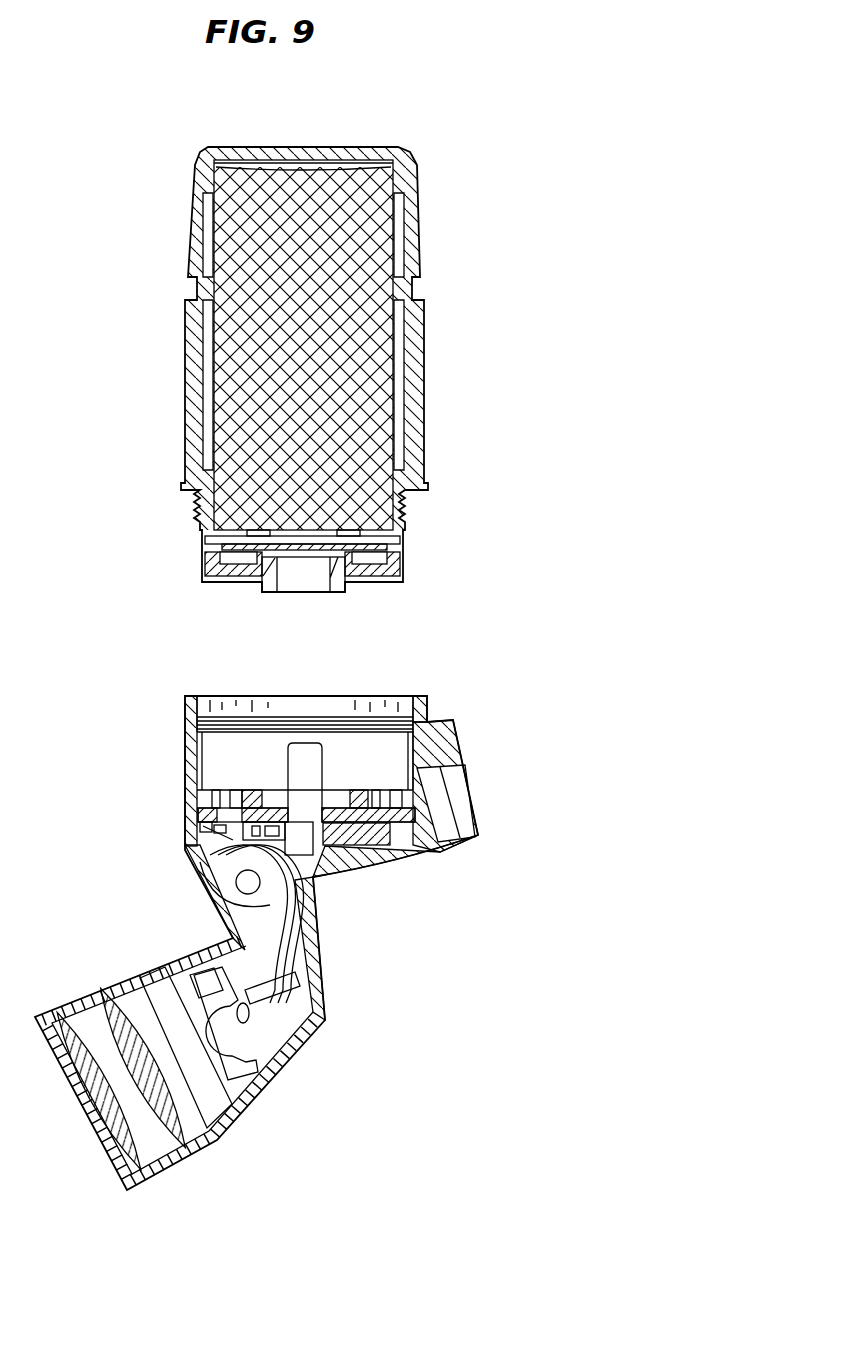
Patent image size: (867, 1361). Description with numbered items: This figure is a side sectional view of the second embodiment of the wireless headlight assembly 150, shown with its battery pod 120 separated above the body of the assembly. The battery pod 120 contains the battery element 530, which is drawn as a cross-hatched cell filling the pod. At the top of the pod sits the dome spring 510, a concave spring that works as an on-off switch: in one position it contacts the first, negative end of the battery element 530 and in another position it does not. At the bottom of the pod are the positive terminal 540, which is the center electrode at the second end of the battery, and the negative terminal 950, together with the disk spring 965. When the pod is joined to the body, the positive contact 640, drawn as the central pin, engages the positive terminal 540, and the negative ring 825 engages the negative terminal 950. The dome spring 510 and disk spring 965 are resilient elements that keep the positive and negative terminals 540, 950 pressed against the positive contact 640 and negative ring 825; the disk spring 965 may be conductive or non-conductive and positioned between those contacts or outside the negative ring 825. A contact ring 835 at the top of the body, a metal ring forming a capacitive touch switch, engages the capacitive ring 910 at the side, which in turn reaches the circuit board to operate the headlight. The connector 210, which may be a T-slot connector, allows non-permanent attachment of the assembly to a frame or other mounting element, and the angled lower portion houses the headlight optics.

The battery pod 120 is at (425, 356).
The headlight assembly 150 is at (203, 1153).
The connector 210 is at (478, 807).
The dome spring 510 is at (362, 166).
The battery element 530 is at (375, 348).
The positive terminal 540 is at (295, 578).
The positive contact 640 is at (308, 760).
The negative ring 825 is at (245, 788).
The contact ring 835 is at (270, 710).
The capacitive ring 910 is at (415, 775).
The negative terminal 950 is at (360, 585).
The disk spring 965 is at (380, 526).